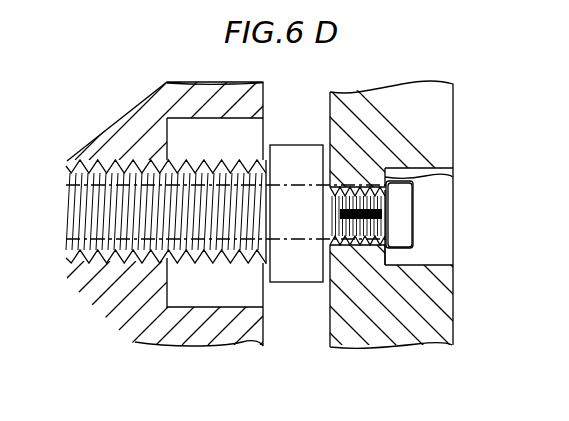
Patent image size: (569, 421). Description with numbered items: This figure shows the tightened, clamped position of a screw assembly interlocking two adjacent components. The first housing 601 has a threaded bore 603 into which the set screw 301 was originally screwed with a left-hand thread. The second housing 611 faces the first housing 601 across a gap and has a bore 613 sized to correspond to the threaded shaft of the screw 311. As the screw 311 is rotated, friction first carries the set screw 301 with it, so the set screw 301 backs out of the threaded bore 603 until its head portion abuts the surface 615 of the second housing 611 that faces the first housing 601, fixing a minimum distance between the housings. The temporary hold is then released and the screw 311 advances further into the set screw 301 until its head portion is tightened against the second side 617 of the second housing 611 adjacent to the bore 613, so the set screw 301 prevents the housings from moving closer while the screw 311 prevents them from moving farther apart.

The first housing 601 is at (112, 121).
The threaded bore 603 is at (270, 298).
The set screw 301 is at (320, 178).
The second housing 611 is at (388, 88).
The surface of second housing 615 is at (330, 92).
The second side of second housing 617 is at (453, 174).
The screw 311 is at (414, 200).
The bore of second housing 613 is at (462, 240).